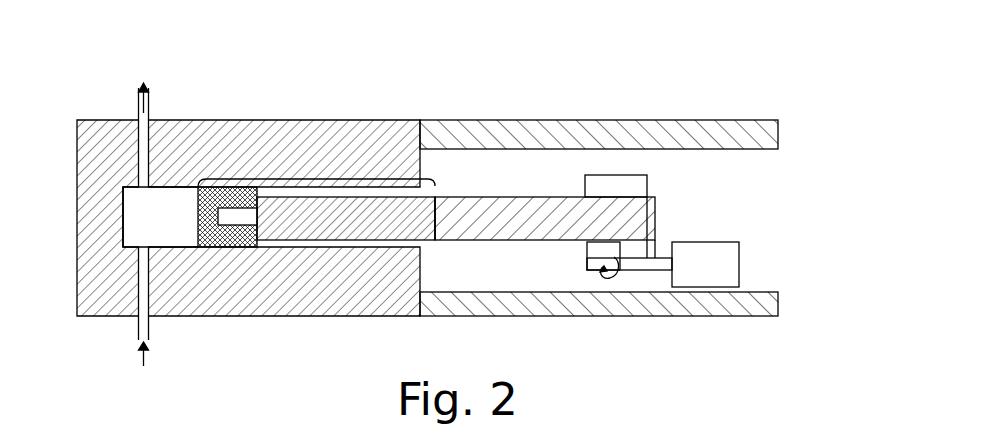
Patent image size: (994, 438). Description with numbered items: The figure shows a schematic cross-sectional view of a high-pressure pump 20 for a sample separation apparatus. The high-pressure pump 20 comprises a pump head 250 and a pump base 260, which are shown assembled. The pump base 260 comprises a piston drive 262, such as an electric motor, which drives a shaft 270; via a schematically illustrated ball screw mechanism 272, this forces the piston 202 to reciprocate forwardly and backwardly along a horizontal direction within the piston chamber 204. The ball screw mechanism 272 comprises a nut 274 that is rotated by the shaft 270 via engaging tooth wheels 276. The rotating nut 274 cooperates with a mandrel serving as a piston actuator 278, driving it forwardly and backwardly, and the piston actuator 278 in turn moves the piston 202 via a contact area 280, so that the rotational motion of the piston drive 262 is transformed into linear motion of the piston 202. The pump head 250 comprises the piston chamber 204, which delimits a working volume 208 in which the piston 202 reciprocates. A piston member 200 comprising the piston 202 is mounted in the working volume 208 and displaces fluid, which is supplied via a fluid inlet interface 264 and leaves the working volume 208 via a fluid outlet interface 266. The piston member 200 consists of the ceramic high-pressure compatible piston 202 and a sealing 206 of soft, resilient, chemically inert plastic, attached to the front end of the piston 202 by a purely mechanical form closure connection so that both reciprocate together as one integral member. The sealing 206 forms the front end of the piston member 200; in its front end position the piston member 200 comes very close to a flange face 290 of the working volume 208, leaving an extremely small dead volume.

The high-pressure pump 20 is at (781, 133).
The piston member 200 is at (294, 181).
The piston 202 is at (357, 223).
The piston chamber 204 is at (182, 292).
The sealing 206 is at (235, 238).
The working volume 208 is at (172, 237).
The pump head 250 is at (78, 65).
The pump base 260 is at (420, 328).
The piston drive 262 is at (713, 260).
The fluid inlet interface 264 is at (137, 322).
The fluid outlet interface 266 is at (150, 112).
The shaft 270 is at (658, 253).
The ball screw mechanism 272 is at (627, 246).
The nut 274 is at (655, 223).
The tooth wheels 276 is at (587, 251).
The piston actuator 278 is at (463, 227).
The contact area 280 is at (435, 218).
The flange face 290 is at (128, 218).